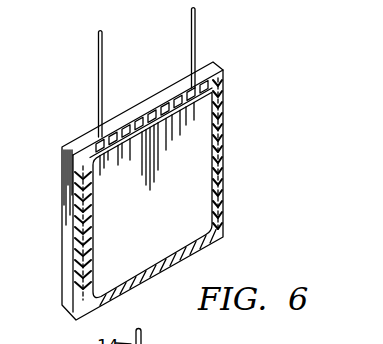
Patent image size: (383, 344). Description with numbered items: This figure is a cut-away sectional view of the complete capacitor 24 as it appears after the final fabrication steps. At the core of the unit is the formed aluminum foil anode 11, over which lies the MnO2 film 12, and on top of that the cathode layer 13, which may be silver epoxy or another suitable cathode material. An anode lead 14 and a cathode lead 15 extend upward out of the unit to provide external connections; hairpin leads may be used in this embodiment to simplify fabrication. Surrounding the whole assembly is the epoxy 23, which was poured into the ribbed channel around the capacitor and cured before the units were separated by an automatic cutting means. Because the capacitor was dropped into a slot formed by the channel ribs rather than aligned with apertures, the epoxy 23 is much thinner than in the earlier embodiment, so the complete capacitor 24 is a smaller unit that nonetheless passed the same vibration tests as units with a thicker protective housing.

The formed aluminum foil anode 11 is at (198, 155).
The MnO2 film 12 is at (214, 98).
The cathode layer 13 is at (220, 113).
The anode lead 14 is at (98, 55).
The cathode lead 15 is at (195, 27).
The epoxy 23 is at (221, 178).
The complete capacitor 24 is at (72, 130).